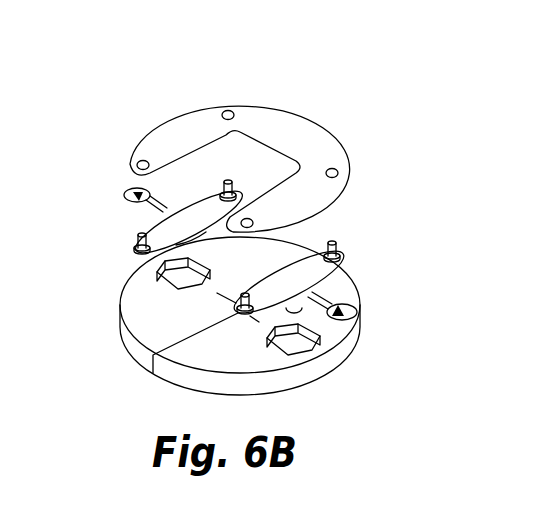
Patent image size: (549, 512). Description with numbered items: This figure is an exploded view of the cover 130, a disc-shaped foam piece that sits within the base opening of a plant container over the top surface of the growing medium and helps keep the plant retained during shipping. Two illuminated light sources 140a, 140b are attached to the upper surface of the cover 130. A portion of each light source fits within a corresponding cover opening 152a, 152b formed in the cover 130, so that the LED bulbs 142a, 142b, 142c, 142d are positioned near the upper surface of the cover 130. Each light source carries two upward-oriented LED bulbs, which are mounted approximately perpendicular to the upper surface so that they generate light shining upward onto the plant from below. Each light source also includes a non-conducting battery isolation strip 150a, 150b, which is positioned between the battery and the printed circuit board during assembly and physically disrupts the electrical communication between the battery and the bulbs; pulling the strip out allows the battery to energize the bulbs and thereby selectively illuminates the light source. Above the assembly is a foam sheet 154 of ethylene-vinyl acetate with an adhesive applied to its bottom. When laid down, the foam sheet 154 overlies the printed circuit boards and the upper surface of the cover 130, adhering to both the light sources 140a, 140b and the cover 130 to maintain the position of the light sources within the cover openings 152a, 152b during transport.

The cover 130 is at (88, 347).
The foam sheet 154 is at (286, 126).
The illuminated light source 140a is at (200, 210).
The illuminated light source 140b is at (344, 270).
The LED bulb 142a is at (136, 246).
The LED bulb 142b is at (238, 316).
The LED bulb 142c is at (226, 186).
The LED bulb 142d is at (338, 253).
The battery isolation strip 150a is at (124, 189).
The battery isolation strip 150b is at (357, 312).
The cover opening 152a is at (152, 283).
The cover opening 152b is at (315, 348).